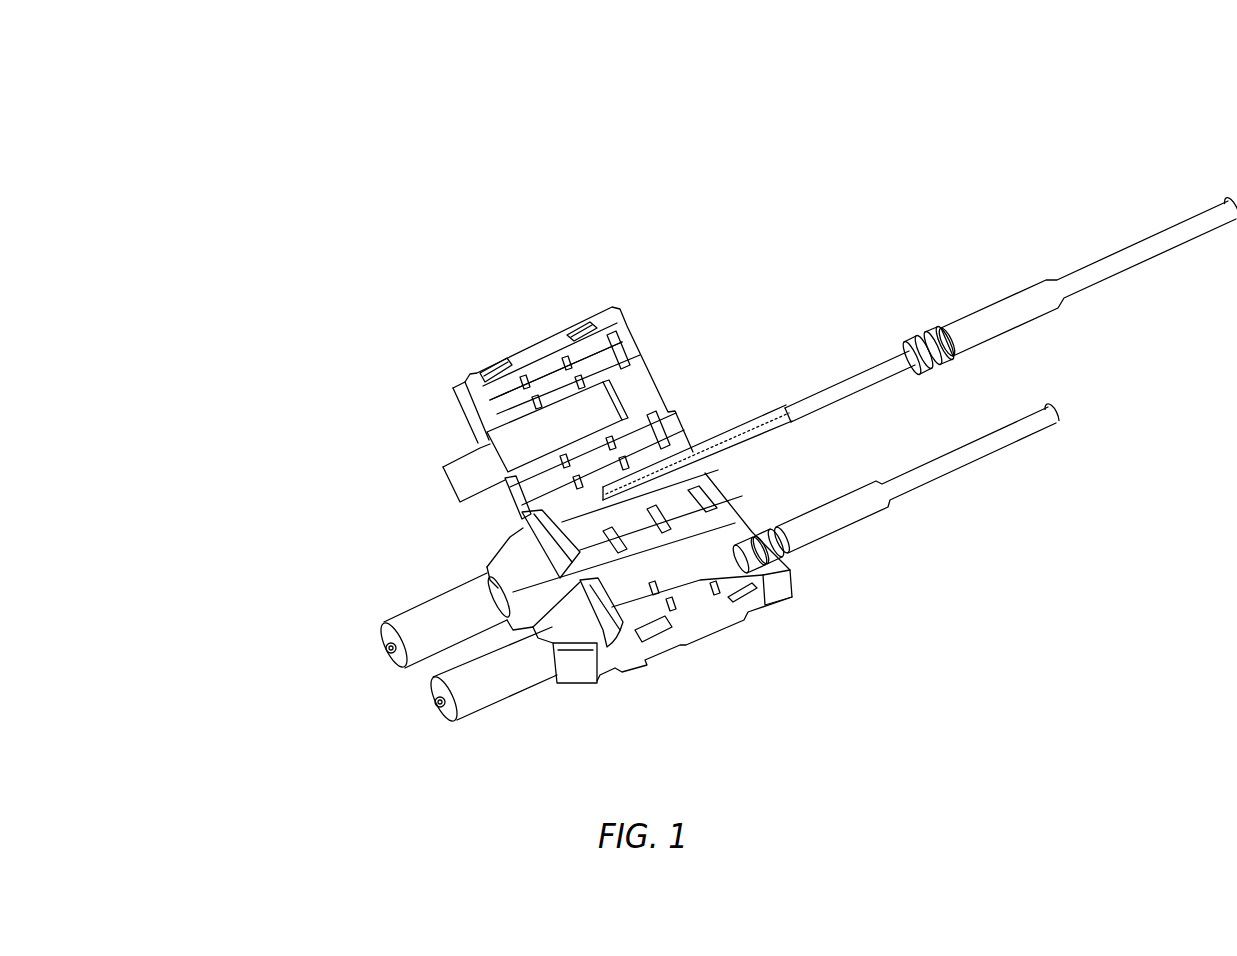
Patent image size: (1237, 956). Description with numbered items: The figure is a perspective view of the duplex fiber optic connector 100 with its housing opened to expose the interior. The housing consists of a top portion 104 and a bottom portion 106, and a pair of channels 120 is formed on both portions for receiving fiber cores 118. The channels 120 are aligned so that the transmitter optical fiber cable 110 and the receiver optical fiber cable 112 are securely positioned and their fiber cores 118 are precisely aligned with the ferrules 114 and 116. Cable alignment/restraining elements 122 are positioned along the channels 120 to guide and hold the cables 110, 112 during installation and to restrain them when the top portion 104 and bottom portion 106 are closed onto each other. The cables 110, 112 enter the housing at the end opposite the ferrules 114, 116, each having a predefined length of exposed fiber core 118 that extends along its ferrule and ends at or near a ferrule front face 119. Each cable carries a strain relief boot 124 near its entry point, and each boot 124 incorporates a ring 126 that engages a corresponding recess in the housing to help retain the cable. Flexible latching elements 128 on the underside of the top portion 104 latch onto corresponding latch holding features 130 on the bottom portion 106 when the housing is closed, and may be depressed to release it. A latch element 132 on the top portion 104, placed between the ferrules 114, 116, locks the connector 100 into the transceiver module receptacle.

The duplex fiber optic connector 100 is at (283, 132).
The top portion 104 is at (655, 368).
The bottom portion 106 is at (647, 567).
The transmitter optical fiber cable 110 is at (950, 462).
The receiver optical fiber cable 112 is at (1100, 273).
The ferrule 114 is at (450, 607).
The ferrule 116 is at (467, 670).
The fiber core 118 is at (714, 441).
The ferrule front face 119 is at (423, 695).
The channel 120 is at (667, 423).
The cable alignment/restraining element 122 is at (517, 383).
The strain relief boot 124 is at (820, 523).
The ring 126 is at (953, 373).
The flexible latching element 128 is at (560, 333).
The latch holding feature 130 is at (670, 630).
The latch element 132 is at (447, 485).